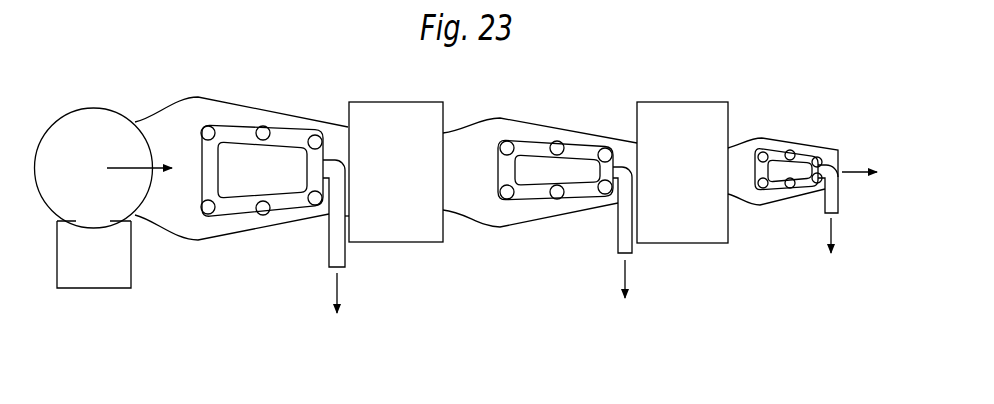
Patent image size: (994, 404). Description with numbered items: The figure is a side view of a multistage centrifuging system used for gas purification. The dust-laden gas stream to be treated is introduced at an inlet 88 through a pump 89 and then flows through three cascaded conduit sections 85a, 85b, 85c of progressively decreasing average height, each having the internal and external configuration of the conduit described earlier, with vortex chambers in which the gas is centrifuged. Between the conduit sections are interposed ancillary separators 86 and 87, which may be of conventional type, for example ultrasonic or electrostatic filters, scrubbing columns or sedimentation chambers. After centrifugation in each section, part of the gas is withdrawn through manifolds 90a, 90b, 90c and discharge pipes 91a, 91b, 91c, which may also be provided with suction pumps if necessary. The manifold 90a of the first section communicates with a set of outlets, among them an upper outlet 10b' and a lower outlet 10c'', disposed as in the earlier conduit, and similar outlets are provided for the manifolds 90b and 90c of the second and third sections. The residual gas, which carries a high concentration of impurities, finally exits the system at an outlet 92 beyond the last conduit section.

The inlet 88 is at (95, 293).
The pump 89 is at (73, 122).
The outlet 10b' is at (232, 79).
The outlet 10c'' is at (307, 232).
The conduit section 85a is at (257, 125).
The conduit section 85b is at (542, 137).
The conduit section 85c is at (773, 147).
The ancillary separator 86 is at (398, 115).
The ancillary separator 87 is at (683, 112).
The manifold 90a is at (243, 200).
The manifold 90b is at (533, 195).
The manifold 90c is at (777, 188).
The discharge pipe 91a is at (345, 252).
The discharge pipe 91b is at (632, 245).
The discharge pipe 91c is at (838, 202).
The outlet 92 is at (873, 174).